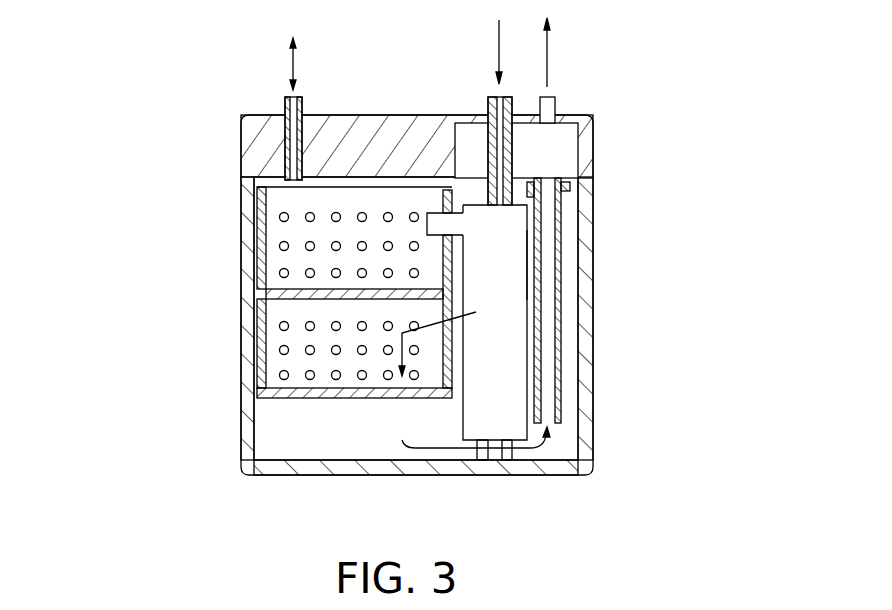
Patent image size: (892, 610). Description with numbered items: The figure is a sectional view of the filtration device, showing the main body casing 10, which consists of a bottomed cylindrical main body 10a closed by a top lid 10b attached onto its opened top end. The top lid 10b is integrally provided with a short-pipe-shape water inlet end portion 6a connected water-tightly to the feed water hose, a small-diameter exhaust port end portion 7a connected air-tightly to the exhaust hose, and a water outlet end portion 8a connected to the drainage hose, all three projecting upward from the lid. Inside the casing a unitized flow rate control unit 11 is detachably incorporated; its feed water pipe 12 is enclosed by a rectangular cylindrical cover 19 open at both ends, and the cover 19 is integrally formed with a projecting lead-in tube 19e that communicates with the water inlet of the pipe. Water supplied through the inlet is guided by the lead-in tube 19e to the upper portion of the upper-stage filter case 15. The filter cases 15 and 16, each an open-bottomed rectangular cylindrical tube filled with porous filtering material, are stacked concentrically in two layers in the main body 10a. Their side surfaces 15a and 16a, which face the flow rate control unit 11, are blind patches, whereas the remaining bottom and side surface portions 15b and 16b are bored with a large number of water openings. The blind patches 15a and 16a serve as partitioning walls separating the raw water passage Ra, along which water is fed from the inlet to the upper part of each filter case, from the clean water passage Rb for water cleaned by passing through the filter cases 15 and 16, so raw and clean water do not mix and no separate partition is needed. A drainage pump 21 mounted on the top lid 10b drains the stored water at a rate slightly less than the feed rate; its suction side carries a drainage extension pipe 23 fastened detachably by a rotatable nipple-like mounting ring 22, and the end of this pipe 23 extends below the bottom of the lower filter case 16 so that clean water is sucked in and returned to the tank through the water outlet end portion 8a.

The main body casing 10 is at (238, 290).
The main body 10a is at (242, 338).
The top lid 10b is at (245, 140).
The exhaust port end portion 7a is at (285, 104).
The water inlet end portion 6a is at (488, 98).
The water outlet end portion 8a is at (555, 100).
The drainage pump 21 is at (573, 150).
The mounting ring 22 is at (575, 190).
The feed water pipe 12 is at (517, 200).
The drainage extension pipe 23 is at (560, 318).
The cover 19 is at (520, 378).
The lead-in tube 19e is at (426, 226).
The flow rate control unit 11 is at (520, 272).
The upper-stage filter case 15 is at (322, 188).
The side surface of upper filter case 15a is at (453, 196).
The upper basket perforated wall 15b is at (260, 247).
The lower-stage filter case 16 is at (326, 413).
The side surface of lower filter case 16a is at (455, 368).
The lower basket perforated plate 16b is at (300, 398).
The raw water passage Ra is at (455, 335).
The clean water passage Rb is at (537, 452).